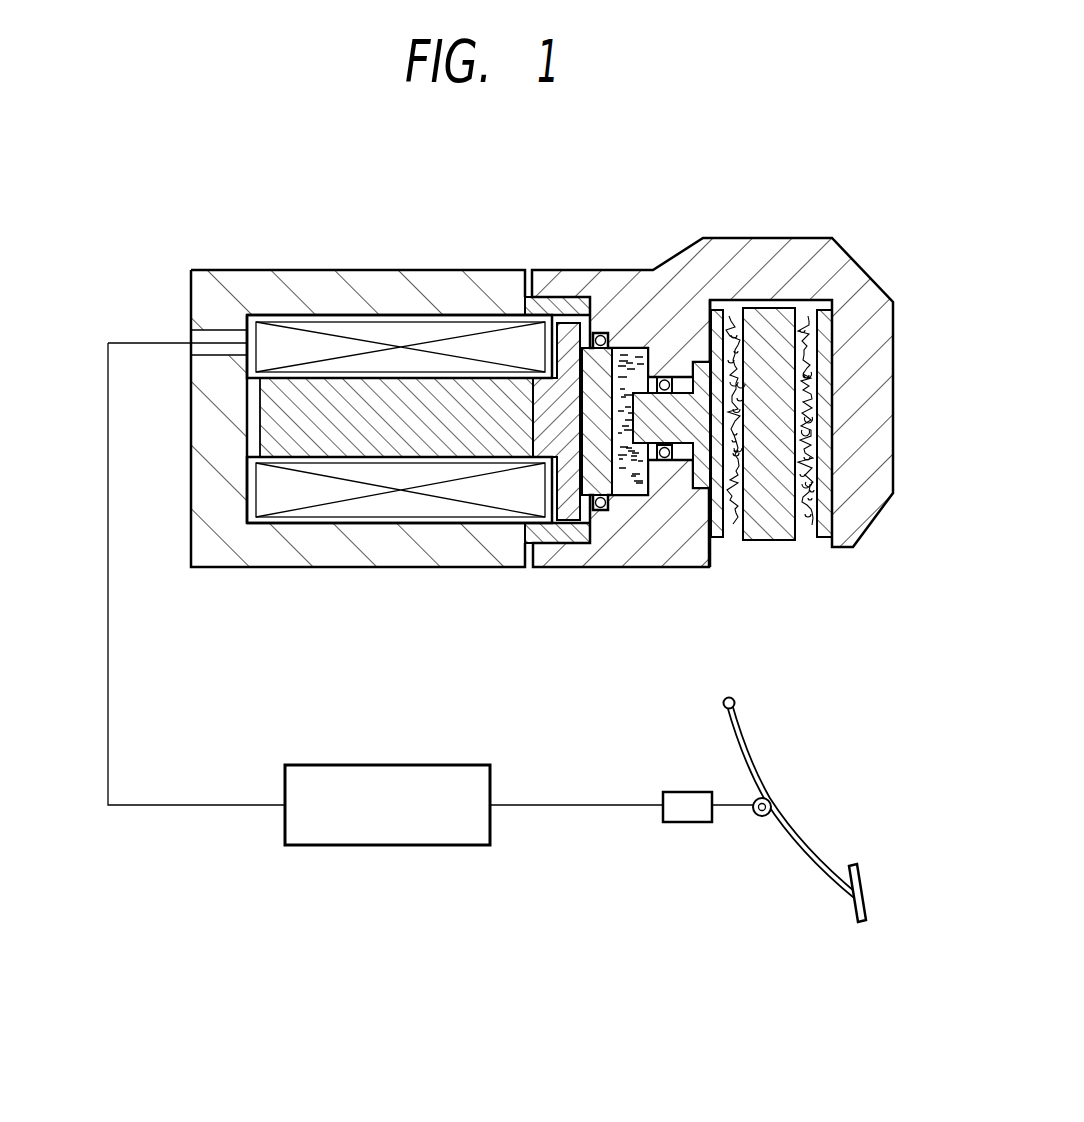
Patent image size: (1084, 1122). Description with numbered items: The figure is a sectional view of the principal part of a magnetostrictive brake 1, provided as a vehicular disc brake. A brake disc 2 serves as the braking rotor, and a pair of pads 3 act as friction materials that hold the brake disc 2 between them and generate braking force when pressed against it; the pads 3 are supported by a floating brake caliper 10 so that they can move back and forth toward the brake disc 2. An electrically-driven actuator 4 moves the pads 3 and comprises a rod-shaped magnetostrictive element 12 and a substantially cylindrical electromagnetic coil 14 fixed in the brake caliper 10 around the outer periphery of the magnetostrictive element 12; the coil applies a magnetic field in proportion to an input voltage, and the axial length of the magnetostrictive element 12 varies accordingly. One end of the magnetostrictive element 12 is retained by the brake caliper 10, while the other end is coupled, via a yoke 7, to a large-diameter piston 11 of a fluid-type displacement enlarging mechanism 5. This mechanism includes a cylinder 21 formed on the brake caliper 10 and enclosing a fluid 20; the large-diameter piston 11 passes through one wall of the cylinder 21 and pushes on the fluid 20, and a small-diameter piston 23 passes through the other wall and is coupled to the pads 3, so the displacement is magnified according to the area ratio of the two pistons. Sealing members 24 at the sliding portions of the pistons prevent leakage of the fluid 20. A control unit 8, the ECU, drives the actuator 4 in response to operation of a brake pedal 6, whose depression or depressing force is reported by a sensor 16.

The magnetostrictive brake 1 is at (352, 586).
The brake disc 2 is at (785, 442).
The pads 3 is at (805, 325).
The actuator 4 is at (278, 340).
The fluid-type displacement enlarging mechanism 5 is at (625, 336).
The brake pedal 6 is at (862, 890).
The yoke 7 is at (567, 505).
The control unit 8 is at (450, 848).
The brake caliper 10 is at (588, 275).
The large-diameter piston 11 is at (587, 428).
The magnetostrictive element 12 is at (347, 387).
The electromagnetic coil 14 is at (470, 345).
The sensor 16 is at (690, 823).
The fluid 20 is at (652, 272).
The cylinder 21 is at (647, 362).
The small-diameter piston 23 is at (686, 430).
The sealing members 24 is at (603, 510).